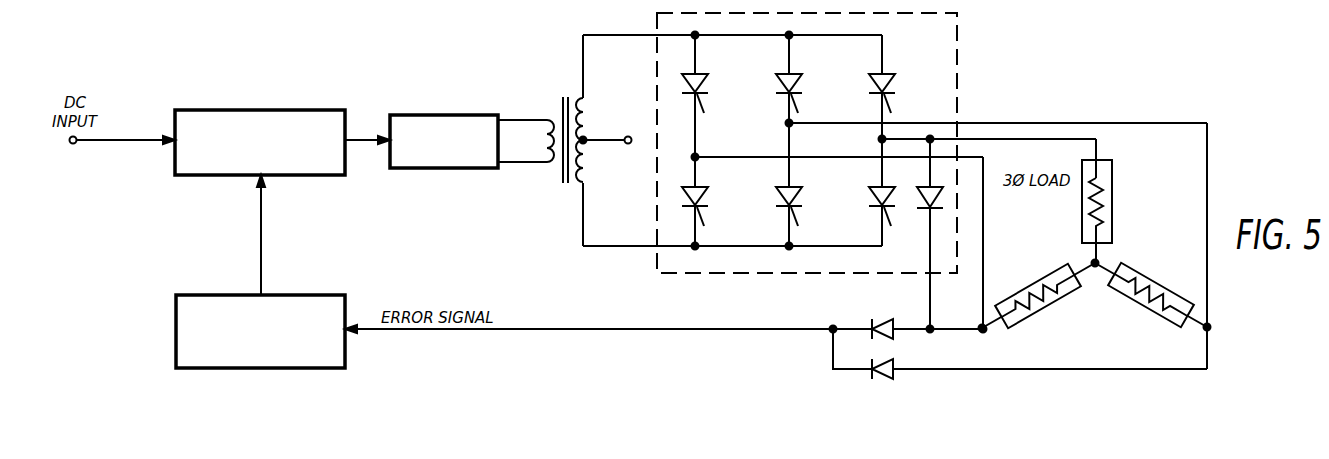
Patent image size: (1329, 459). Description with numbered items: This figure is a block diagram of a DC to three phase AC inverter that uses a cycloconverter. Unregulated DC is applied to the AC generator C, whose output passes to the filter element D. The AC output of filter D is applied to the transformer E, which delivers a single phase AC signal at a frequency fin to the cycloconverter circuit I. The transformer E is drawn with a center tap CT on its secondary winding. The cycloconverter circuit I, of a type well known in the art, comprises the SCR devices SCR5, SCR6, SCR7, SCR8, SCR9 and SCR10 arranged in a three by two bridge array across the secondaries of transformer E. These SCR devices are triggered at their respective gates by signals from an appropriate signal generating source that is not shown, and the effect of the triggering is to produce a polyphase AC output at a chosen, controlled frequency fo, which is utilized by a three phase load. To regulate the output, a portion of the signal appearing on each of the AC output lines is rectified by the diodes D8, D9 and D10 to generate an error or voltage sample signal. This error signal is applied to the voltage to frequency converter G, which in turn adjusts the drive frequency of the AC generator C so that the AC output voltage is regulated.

The AC generator C is at (267, 92).
The filter element D is at (452, 94).
The transformer E is at (558, 97).
The center tap CT is at (607, 130).
The input frequency fin is at (731, 23).
The output frequency fo is at (998, 234).
The cycloconverter circuit I is at (656, 265).
The SCR device SCR5 is at (724, 70).
The SCR device SCR6 is at (818, 70).
The SCR device SCR7 is at (911, 70).
The SCR device SCR8 is at (724, 184).
The SCR device SCR9 is at (778, 196).
The SCR device SCR10 is at (870, 194).
The diode D8 is at (925, 194).
The diode D9 is at (891, 320).
The diode D10 is at (878, 380).
The voltage to frequency converter G is at (345, 295).